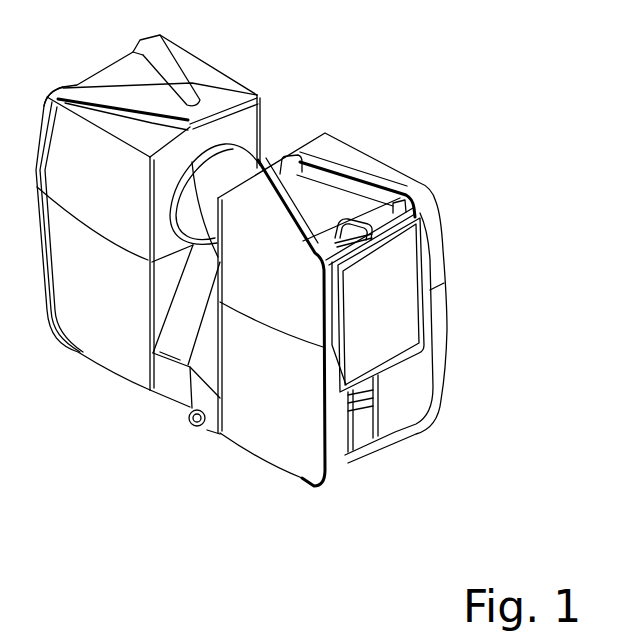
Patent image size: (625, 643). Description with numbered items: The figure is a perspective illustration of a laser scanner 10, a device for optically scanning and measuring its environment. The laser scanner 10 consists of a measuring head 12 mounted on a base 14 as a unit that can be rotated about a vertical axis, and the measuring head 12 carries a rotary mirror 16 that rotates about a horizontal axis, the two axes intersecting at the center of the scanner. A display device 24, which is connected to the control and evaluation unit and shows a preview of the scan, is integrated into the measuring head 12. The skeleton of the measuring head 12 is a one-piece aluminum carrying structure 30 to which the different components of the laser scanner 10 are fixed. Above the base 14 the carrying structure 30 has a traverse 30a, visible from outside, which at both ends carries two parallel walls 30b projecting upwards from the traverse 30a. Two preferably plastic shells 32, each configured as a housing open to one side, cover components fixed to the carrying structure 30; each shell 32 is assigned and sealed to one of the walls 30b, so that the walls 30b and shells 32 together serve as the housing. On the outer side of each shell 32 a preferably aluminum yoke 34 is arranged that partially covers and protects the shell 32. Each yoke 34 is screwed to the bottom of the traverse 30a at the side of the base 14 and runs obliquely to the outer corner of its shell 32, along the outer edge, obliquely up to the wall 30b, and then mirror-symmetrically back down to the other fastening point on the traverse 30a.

The laser scanner 10 is at (423, 138).
The measuring head 12 is at (388, 435).
The base 14 is at (187, 413).
The rotary mirror 16 is at (233, 163).
The display device 24 is at (398, 305).
The carrying structure 30 is at (173, 367).
The traverse 30a is at (208, 342).
The walls 30b is at (245, 115).
The shells 32 is at (105, 328).
The yoke 34 is at (80, 92).